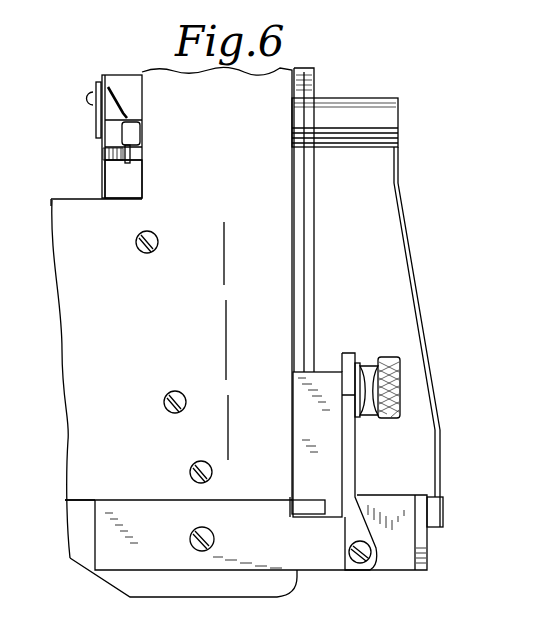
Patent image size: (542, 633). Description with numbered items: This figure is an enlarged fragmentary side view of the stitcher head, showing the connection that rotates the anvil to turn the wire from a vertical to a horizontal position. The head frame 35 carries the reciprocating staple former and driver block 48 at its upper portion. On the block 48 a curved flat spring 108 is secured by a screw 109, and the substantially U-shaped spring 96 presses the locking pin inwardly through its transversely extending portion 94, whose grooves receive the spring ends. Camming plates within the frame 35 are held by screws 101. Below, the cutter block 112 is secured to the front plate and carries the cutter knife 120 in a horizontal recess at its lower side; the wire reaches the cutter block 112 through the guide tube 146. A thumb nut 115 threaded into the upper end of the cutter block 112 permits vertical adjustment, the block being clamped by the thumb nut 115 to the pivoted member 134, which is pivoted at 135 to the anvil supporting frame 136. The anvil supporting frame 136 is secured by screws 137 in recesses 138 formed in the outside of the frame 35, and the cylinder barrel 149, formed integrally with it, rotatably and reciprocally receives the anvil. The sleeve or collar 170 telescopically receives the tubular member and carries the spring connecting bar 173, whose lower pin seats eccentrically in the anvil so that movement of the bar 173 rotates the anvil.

The head frame 35 is at (83, 428).
The reciprocating staple former and driver block 48 is at (125, 73).
The screw 109 is at (92, 97).
The spring 96 is at (112, 104).
The transversely extending portion 94 is at (128, 134).
The curved flat spring 108 is at (102, 178).
The guide tube 146 is at (306, 238).
The sleeve or collar 170 is at (362, 100).
The spring connecting bar 173 is at (414, 258).
The screws 101 is at (158, 244).
The cutter block 112 is at (325, 368).
The cutter knife 120 is at (312, 499).
The thumb nut 115 is at (393, 356).
The pivoted member 134 is at (356, 452).
The cylinder barrel 149 is at (388, 503).
The pivot 135 is at (360, 565).
The recesses 138 is at (80, 558).
The anvil supporting frame 136 is at (326, 566).
The screws 137 is at (215, 542).